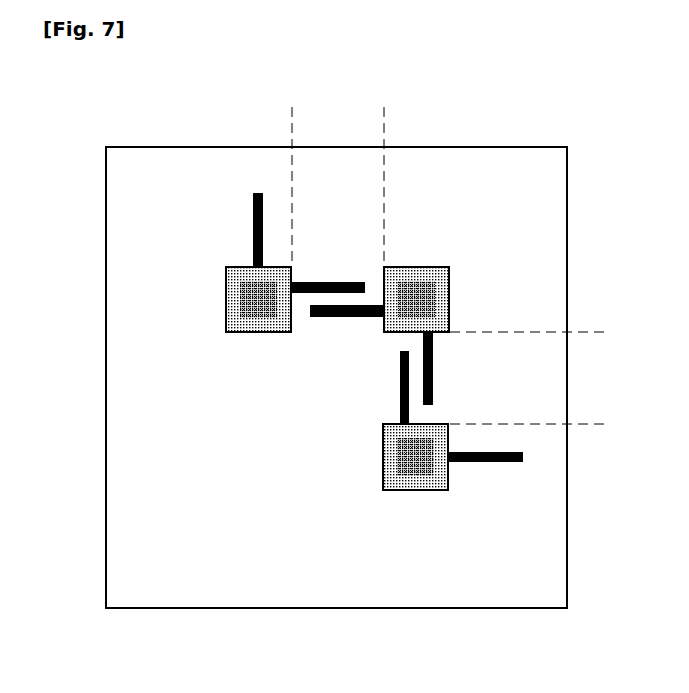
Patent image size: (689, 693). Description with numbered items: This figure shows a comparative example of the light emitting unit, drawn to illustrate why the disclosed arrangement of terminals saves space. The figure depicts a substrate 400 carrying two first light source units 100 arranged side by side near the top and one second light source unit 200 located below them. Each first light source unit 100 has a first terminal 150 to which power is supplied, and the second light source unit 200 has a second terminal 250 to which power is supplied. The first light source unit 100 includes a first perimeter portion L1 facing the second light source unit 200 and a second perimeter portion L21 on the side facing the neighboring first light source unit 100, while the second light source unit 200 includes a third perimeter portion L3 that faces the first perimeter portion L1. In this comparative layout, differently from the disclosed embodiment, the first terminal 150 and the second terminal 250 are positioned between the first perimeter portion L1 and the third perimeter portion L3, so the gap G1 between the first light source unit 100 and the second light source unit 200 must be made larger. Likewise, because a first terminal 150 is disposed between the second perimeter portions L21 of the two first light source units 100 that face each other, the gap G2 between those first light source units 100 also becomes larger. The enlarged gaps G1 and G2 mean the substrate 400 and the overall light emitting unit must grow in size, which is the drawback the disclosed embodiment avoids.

The substrate 400 is at (485, 147).
The first light source unit 100 is at (226, 288).
The first terminal 150 is at (433, 352).
The second terminal 250 is at (410, 415).
The second light source unit 200 is at (437, 490).
The first perimeter portion L1 is at (388, 332).
The second perimeter portion L21 is at (295, 332).
The third perimeter portion L3 is at (390, 424).
The gap between the first light source unit and the second light source unit G1 is at (609, 424).
The gap between the first light source units G2 is at (384, 113).